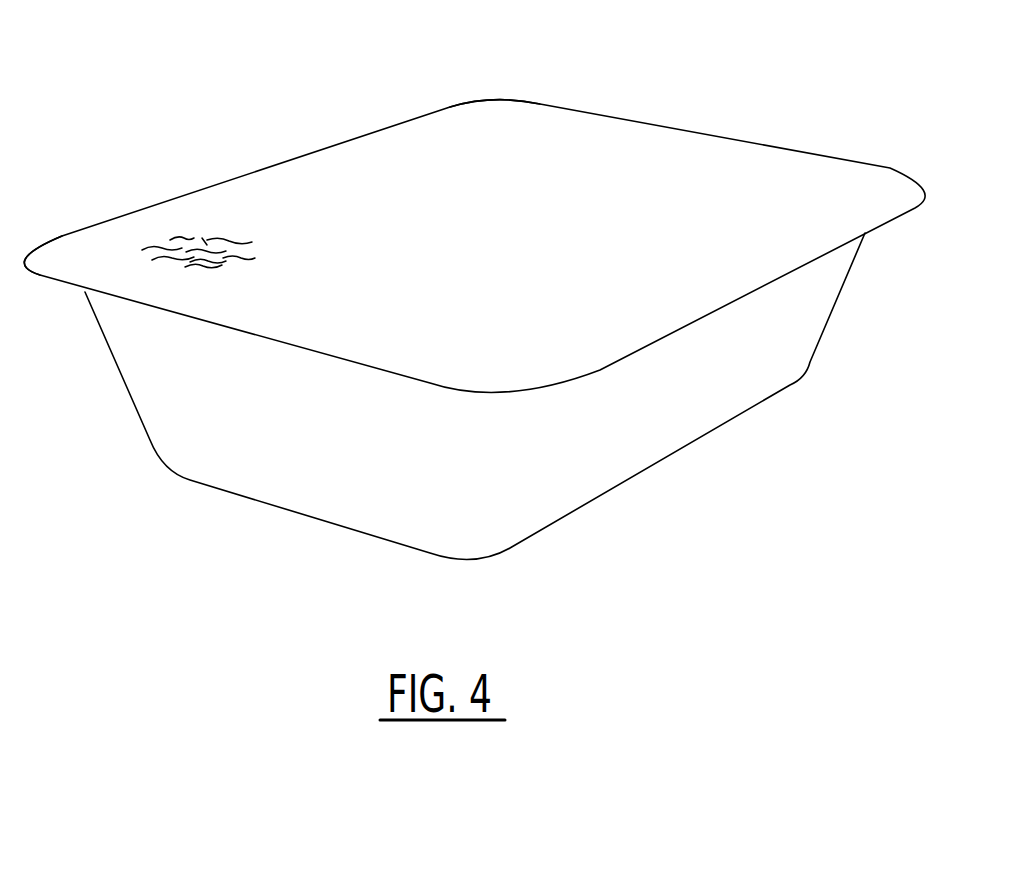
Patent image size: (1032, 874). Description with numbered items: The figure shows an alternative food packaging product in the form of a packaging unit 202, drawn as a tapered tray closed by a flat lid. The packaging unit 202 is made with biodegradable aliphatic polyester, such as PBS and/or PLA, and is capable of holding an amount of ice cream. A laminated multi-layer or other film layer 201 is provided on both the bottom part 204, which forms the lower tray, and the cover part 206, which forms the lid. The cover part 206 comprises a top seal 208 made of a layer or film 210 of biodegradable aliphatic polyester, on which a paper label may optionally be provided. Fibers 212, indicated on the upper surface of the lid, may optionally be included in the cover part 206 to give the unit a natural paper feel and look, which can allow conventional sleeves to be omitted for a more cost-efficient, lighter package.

The film layer 201 is at (473, 292).
The packaging unit 202 is at (473, 204).
The bottom part 204 is at (168, 427).
The cover part 206 is at (65, 235).
The top seal 208 is at (836, 114).
The layer or film 210 is at (661, 183).
The fibers 212 is at (200, 238).